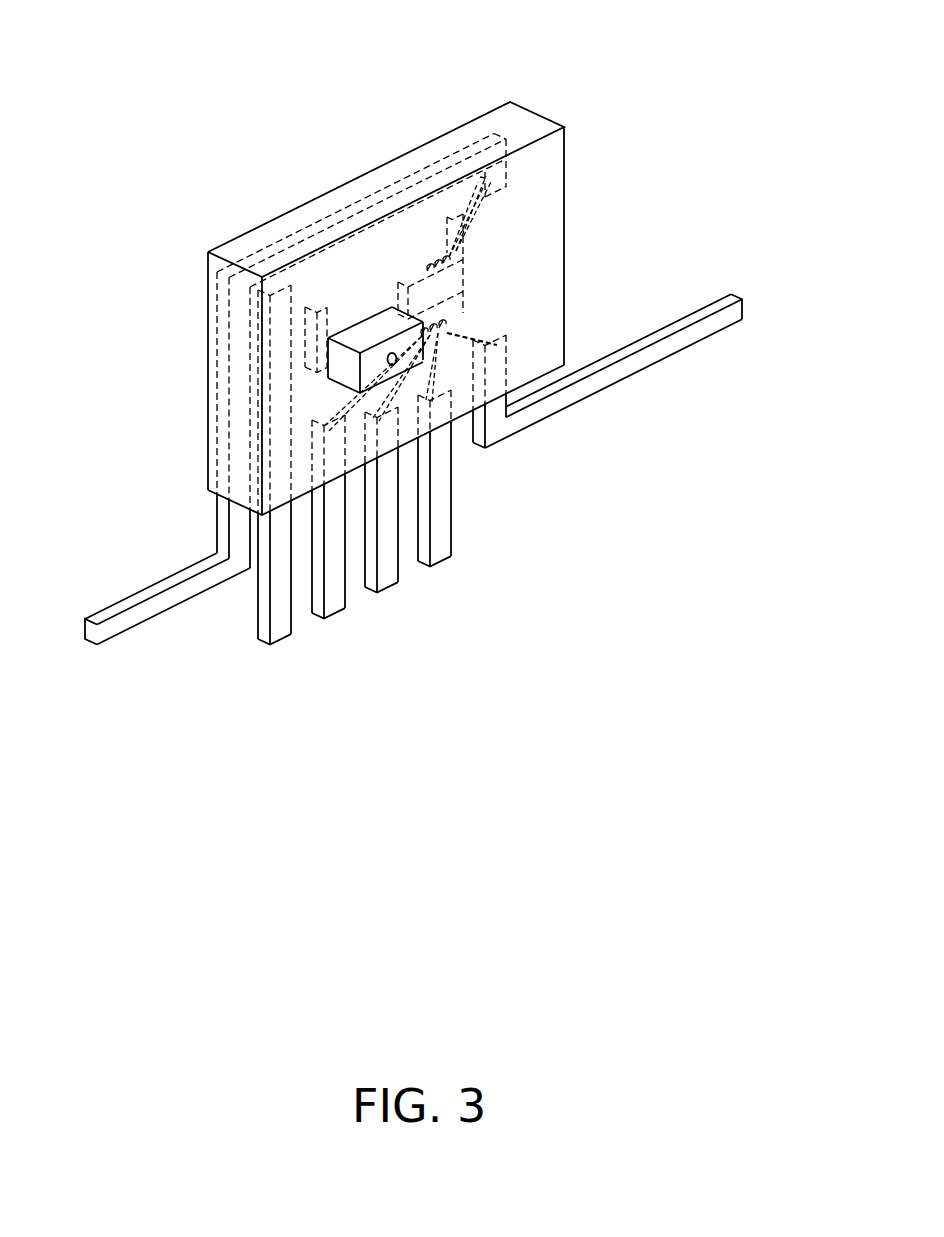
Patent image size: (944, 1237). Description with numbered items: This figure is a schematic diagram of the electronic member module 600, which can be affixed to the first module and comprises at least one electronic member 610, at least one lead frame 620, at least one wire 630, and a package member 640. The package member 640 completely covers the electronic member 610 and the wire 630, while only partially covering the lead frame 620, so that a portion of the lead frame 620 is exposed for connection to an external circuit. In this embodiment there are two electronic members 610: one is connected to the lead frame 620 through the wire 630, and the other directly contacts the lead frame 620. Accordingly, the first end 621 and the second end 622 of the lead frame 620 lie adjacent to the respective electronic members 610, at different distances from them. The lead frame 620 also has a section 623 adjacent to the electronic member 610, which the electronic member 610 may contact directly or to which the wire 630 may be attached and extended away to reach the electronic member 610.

The electronic member module 600 is at (98, 46).
The electronic member 610 is at (371, 332).
The lead frame 620 is at (165, 584).
The first end 621 is at (410, 262).
The second end 622 is at (330, 367).
The section 623 is at (488, 200).
The wire 630 is at (460, 320).
The package member 640 is at (552, 156).